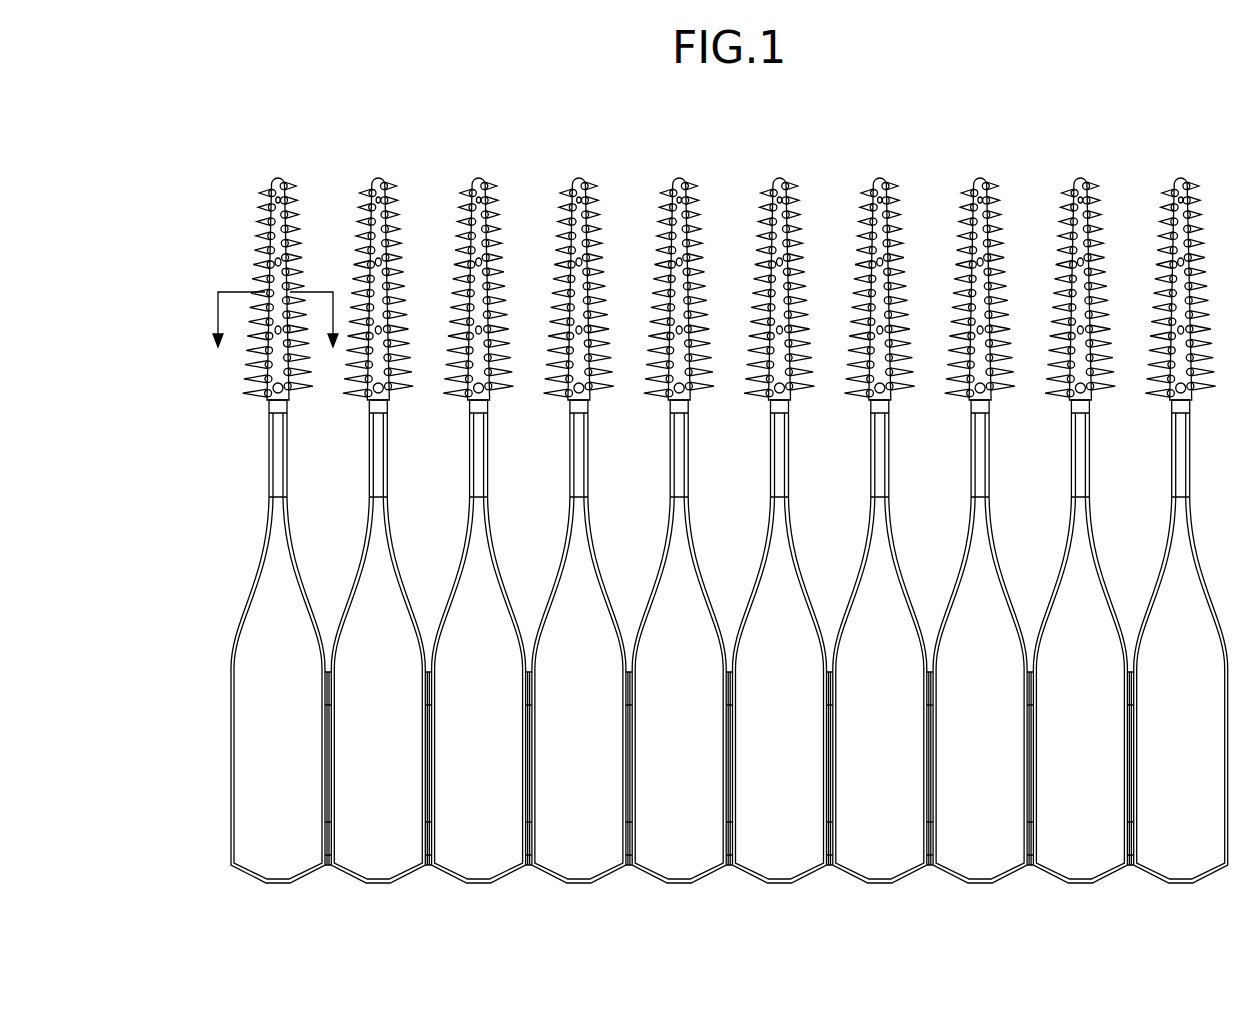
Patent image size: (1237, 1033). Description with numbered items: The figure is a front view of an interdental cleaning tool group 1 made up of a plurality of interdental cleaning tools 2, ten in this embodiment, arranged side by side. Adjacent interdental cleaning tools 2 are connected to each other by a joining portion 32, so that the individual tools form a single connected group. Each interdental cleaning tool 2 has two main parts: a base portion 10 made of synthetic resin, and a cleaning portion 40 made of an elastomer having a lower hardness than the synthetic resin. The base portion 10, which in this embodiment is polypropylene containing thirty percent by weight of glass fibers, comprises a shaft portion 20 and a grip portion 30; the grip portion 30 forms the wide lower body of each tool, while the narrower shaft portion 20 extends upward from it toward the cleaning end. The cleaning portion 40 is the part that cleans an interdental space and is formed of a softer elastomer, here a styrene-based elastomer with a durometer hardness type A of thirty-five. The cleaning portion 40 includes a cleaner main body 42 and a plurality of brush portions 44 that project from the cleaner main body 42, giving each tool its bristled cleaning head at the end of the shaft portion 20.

The interdental cleaning tool group 1 is at (540, 115).
The interdental cleaning tool 2 is at (277, 172).
The cleaning portion 40 is at (172, 196).
The brush portion 44 is at (266, 222).
The cleaner main body 42 is at (266, 263).
The base portion 10 is at (164, 497).
The shaft portion 20 is at (276, 518).
The grip portion 30 is at (258, 722).
The joining portion 32 is at (329, 668).